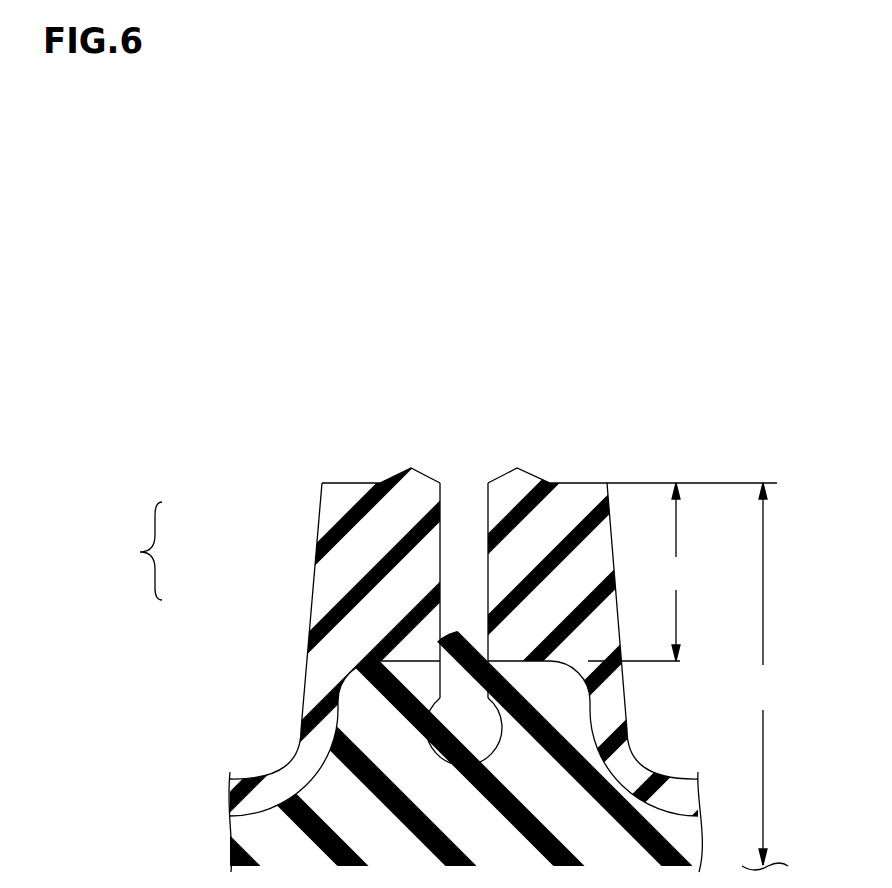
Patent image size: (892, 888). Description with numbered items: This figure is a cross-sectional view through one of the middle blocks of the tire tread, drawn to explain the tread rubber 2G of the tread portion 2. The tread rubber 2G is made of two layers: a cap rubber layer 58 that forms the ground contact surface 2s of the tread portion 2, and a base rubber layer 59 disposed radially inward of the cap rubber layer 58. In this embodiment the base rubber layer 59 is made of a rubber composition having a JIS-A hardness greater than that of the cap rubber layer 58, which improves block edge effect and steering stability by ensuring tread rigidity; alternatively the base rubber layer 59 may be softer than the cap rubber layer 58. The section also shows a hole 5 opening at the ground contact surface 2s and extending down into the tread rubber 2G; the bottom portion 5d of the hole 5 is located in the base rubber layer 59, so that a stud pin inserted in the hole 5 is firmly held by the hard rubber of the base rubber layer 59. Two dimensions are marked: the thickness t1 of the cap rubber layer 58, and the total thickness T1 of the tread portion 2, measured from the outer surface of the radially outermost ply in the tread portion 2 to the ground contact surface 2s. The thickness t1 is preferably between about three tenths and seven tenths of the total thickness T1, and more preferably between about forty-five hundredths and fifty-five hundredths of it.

The tread portion 2 is at (578, 480).
The ground contact surface 2s is at (352, 483).
The hole 5 is at (463, 515).
The bottom portion 5d is at (448, 716).
The cap rubber layer 58 is at (368, 557).
The base rubber layer 59 is at (360, 803).
The tread rubber 2G is at (130, 551).
The thickness of the cap rubber layer t1 is at (682, 572).
The total thickness of the tread portion T1 is at (765, 676).